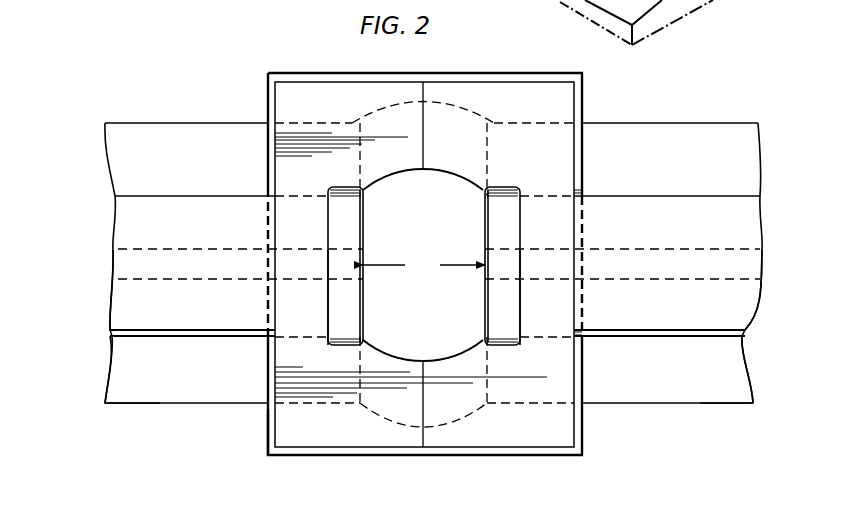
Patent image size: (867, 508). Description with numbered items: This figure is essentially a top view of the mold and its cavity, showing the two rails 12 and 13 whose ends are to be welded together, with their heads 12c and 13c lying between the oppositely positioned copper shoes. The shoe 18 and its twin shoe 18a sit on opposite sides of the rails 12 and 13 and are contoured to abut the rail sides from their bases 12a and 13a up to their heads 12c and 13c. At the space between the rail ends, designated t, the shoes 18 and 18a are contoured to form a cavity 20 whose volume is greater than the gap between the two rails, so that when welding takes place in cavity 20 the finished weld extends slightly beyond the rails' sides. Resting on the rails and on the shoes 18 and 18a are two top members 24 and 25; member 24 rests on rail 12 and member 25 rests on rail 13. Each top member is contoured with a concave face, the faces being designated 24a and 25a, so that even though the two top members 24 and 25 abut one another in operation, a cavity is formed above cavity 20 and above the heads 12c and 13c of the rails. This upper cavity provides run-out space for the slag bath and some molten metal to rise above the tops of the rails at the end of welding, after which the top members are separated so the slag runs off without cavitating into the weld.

The copper shoe 18 is at (266, 74).
The twin shoe 18a is at (266, 437).
The rail 12 is at (161, 96).
The base of rail 12a is at (113, 384).
The rail head 12c is at (110, 296).
The rail 13 is at (736, 96).
The base of rail 13a is at (730, 382).
The rail head 13c is at (746, 270).
The cavity 20 is at (402, 170).
The top member 24 is at (293, 105).
The concave face 24a is at (331, 307).
The top member 25 is at (569, 112).
The concave face 25a is at (508, 302).